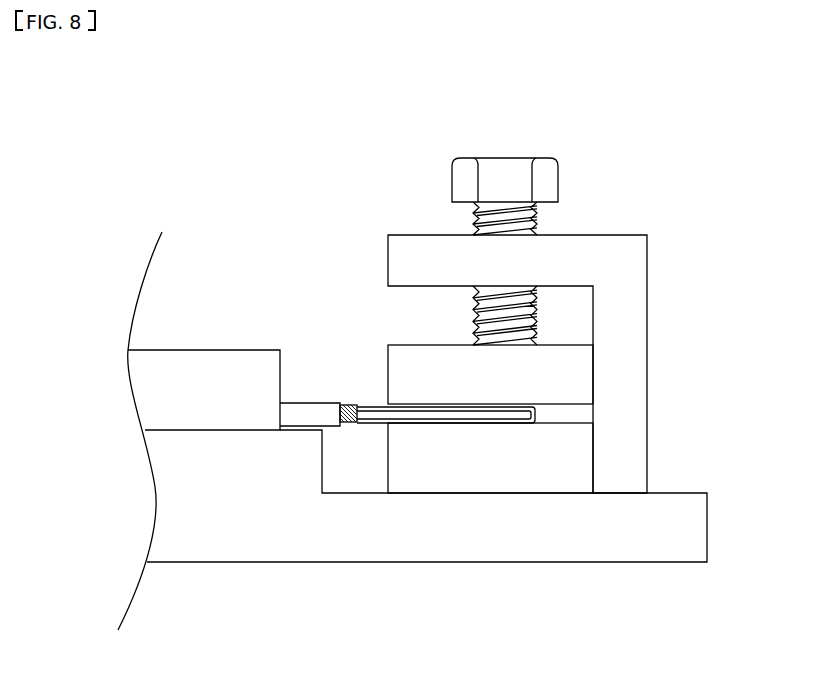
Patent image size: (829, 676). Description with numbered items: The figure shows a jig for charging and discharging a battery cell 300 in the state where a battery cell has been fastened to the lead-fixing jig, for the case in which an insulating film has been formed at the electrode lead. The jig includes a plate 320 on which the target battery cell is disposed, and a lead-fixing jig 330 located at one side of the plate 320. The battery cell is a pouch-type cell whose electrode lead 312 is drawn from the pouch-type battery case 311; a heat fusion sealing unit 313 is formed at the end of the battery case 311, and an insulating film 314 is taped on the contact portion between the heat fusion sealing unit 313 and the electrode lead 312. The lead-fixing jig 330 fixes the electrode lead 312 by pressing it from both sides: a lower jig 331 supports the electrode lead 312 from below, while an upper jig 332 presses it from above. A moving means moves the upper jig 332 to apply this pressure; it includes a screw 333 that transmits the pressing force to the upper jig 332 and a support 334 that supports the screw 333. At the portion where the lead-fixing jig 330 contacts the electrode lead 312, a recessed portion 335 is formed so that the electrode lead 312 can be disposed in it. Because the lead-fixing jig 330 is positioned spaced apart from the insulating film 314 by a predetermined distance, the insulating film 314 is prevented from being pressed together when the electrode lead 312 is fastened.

The jig for charging and discharging a battery cell 300 is at (148, 119).
The battery case 311 is at (163, 349).
The electrode lead 312 is at (447, 415).
The heat fusion sealing unit 313 is at (318, 412).
The insulating film 314 is at (345, 403).
The plate 320 is at (248, 560).
The lead-fixing jig 330 is at (737, 175).
The lower jig 331 is at (577, 447).
The upper jig 332 is at (577, 368).
The screw 333 is at (562, 180).
The support 334 is at (647, 258).
The recessed portion 335 is at (488, 425).